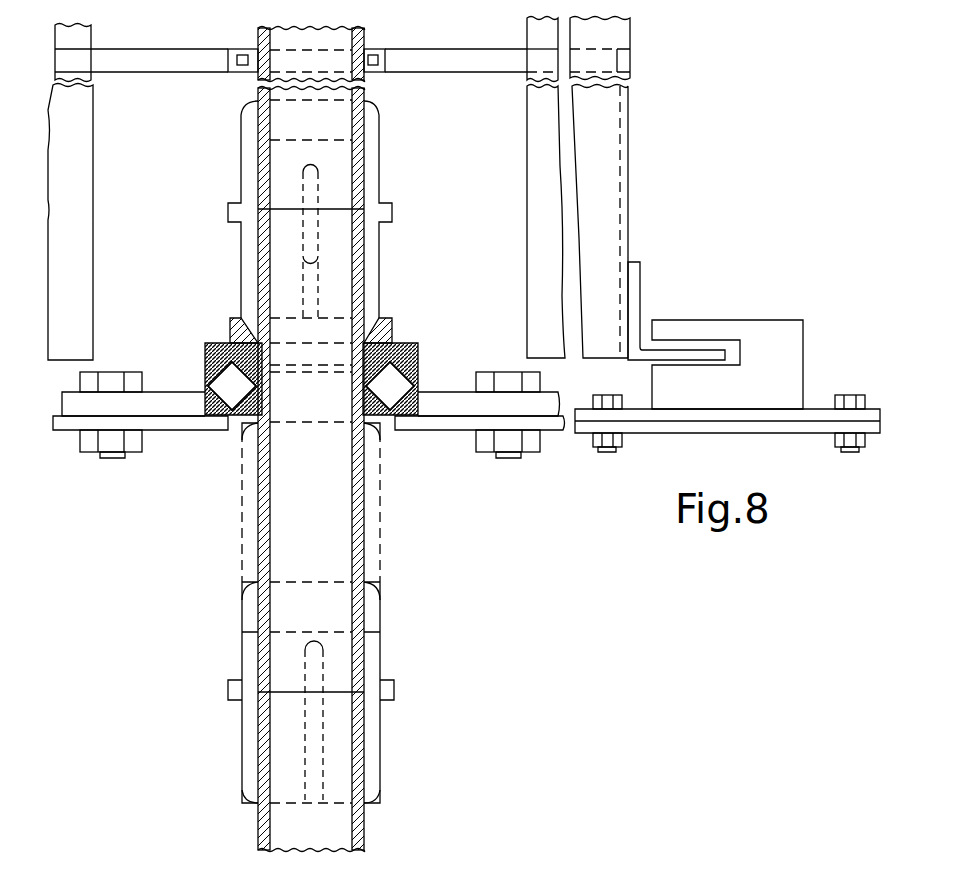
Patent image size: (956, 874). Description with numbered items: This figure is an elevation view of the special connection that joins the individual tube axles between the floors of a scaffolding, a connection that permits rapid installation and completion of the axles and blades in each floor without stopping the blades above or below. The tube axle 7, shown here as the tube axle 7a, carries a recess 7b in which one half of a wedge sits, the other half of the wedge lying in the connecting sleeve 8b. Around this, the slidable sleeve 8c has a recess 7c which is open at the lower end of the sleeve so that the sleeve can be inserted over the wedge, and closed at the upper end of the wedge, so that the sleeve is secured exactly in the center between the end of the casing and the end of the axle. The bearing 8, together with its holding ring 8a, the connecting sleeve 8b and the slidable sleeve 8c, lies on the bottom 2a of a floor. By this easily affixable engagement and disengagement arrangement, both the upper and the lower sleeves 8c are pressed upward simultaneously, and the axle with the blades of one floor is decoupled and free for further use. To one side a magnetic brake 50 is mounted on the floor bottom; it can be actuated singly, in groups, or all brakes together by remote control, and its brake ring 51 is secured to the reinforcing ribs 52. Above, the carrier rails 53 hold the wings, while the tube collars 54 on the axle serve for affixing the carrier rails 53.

The bottom of a floor 2a is at (460, 438).
The tube axle 7 is at (90, 163).
The tube axle 7a is at (362, 35).
The recess 7b is at (313, 190).
The recess 7c is at (315, 290).
The bearing 8 is at (398, 375).
The holding ring 8a is at (458, 400).
The connecting sleeve 8b is at (385, 327).
The slidable sleeve 8c is at (378, 123).
The magnetic brake 50 is at (742, 327).
The brake ring 51 is at (632, 292).
The reinforcing ribs 52 is at (627, 203).
The carrier rails 53 is at (452, 57).
The tube collars 54 is at (248, 50).